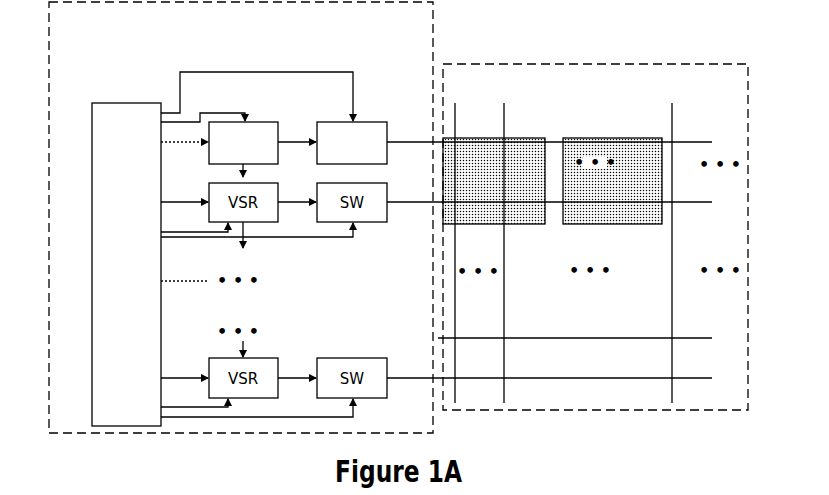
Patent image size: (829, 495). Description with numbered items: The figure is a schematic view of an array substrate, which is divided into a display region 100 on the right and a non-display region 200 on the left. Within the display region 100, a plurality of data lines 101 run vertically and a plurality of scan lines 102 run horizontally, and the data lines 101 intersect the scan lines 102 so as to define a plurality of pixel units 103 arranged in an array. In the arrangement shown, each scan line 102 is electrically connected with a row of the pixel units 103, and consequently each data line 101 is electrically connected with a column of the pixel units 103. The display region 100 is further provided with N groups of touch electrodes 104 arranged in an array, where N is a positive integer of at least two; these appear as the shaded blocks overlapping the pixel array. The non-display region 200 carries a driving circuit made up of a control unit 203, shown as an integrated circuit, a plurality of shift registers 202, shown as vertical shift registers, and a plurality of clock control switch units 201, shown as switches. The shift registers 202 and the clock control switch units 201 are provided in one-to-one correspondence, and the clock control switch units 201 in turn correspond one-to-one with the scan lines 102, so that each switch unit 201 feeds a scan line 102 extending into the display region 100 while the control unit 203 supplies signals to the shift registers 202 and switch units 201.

The display region 100 is at (748, 212).
The data line 101 is at (673, 105).
The scan line 102 is at (703, 140).
The pixel unit 103 is at (468, 355).
The touch electrode 104 is at (523, 138).
The non-display region 200 is at (48, 233).
The clock control switch unit 201 is at (388, 121).
The shift register 202 is at (272, 121).
The control unit 203 is at (94, 101).